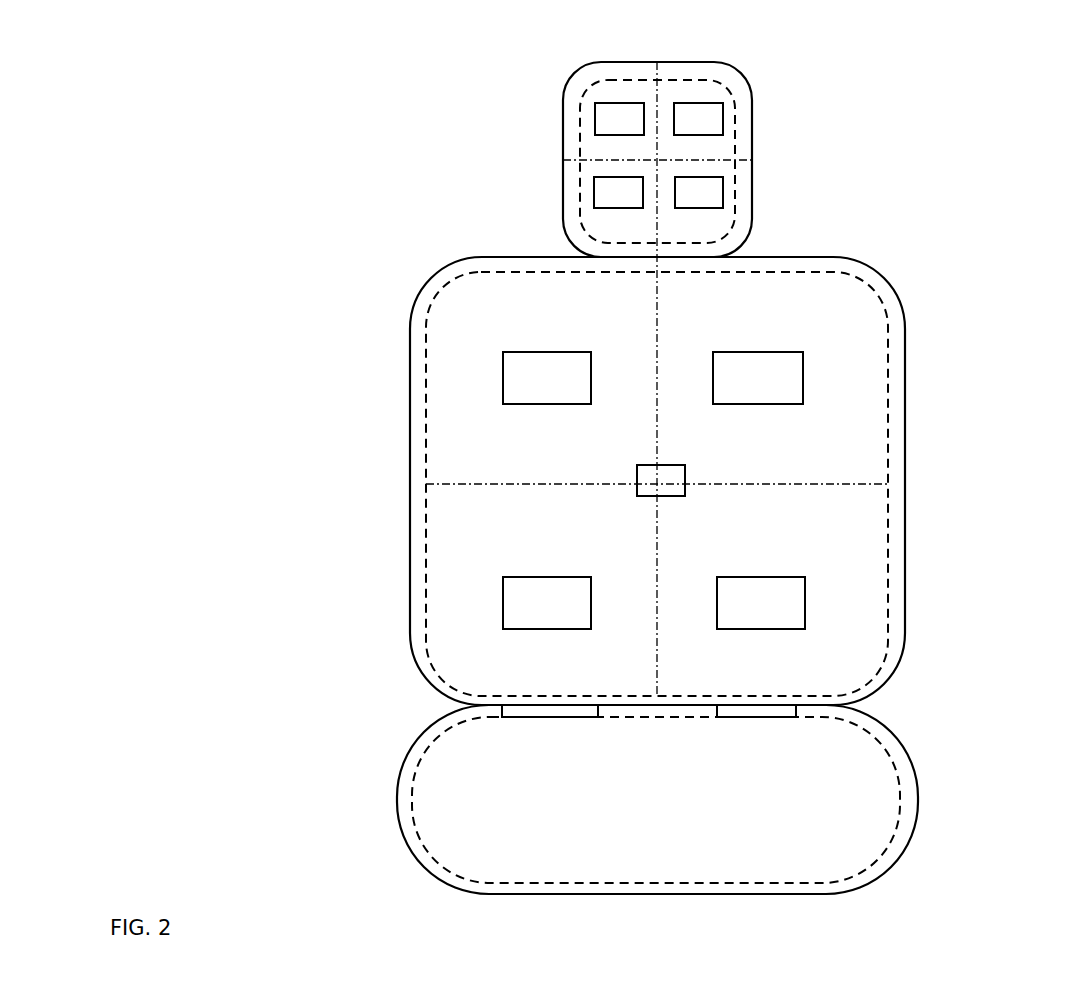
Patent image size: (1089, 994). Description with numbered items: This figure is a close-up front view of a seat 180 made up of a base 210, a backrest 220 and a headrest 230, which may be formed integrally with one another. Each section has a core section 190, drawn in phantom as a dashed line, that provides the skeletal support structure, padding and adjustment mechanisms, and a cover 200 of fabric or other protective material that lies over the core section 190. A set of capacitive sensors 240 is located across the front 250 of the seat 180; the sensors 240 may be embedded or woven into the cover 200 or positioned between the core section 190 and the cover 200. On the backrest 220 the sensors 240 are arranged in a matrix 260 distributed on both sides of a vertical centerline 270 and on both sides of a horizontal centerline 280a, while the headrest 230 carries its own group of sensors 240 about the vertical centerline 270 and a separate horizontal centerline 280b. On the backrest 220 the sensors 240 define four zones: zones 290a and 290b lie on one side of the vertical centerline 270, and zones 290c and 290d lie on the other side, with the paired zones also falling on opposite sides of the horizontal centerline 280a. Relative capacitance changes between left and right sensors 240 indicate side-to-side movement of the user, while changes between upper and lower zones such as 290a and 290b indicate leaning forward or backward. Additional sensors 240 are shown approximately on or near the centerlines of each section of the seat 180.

The seat 180 is at (1011, 121).
The core section 190 is at (583, 84).
The cover 200 is at (752, 118).
The base 210 is at (364, 813).
The backrest 220 is at (347, 499).
The headrest 230 is at (526, 147).
The capacitive sensor 240 is at (568, 390).
The front 250 is at (362, 332).
The matrix 260 is at (620, 92).
The vertical centerline 270 is at (647, 348).
The horizontal centerline of the backrest 280a is at (577, 476).
The horizontal centerline of the headrest 280b is at (556, 167).
The zone 290a is at (515, 328).
The zone 290b is at (507, 538).
The zone 290c is at (750, 321).
The zone 290d is at (746, 538).